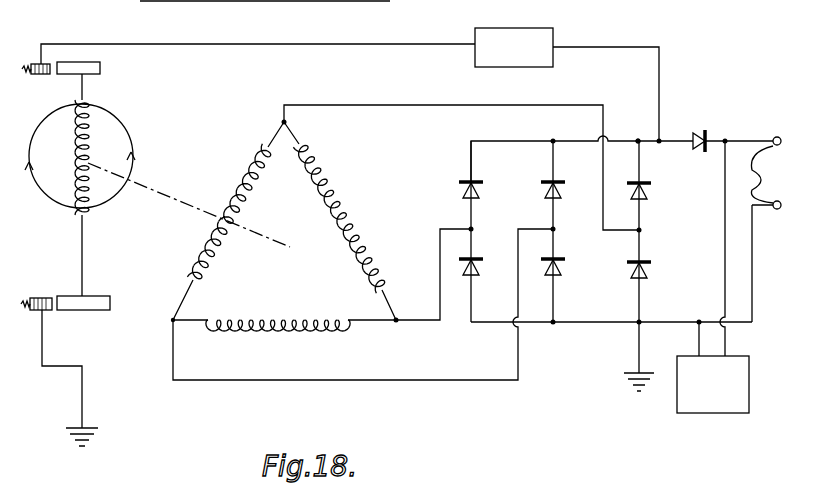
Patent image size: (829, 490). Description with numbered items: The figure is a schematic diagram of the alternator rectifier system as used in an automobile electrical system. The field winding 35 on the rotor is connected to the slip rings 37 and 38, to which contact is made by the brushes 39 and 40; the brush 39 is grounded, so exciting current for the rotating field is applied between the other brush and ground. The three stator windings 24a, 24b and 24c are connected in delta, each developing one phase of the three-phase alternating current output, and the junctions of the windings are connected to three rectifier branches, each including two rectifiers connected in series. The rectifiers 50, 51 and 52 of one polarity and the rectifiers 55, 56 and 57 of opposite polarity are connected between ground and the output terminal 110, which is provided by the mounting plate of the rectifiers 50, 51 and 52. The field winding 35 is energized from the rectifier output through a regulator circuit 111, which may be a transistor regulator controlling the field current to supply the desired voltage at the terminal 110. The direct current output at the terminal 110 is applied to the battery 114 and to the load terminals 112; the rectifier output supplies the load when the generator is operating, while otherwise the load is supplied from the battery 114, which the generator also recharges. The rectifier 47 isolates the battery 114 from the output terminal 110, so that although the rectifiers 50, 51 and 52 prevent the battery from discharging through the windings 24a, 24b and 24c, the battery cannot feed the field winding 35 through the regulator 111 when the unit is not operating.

The stator winding 24a is at (337, 200).
The stator winding 24b is at (278, 333).
The stator winding 24c is at (237, 194).
The field winding 35 is at (88, 136).
The slip ring 37 is at (96, 311).
The slip ring 38 is at (100, 69).
The brush 39 is at (42, 297).
The brush 40 is at (39, 76).
The seventh rectifier 47 is at (703, 128).
The rectifier 50 is at (468, 178).
The rectifier 51 is at (550, 178).
The rectifier 52 is at (642, 185).
The rectifier 55 is at (476, 260).
The rectifier 56 is at (565, 261).
The rectifier 57 is at (651, 263).
The output terminal 110 is at (638, 137).
The regulator circuit 111 is at (549, 34).
The load terminals 112 is at (771, 173).
The battery 114 is at (698, 413).